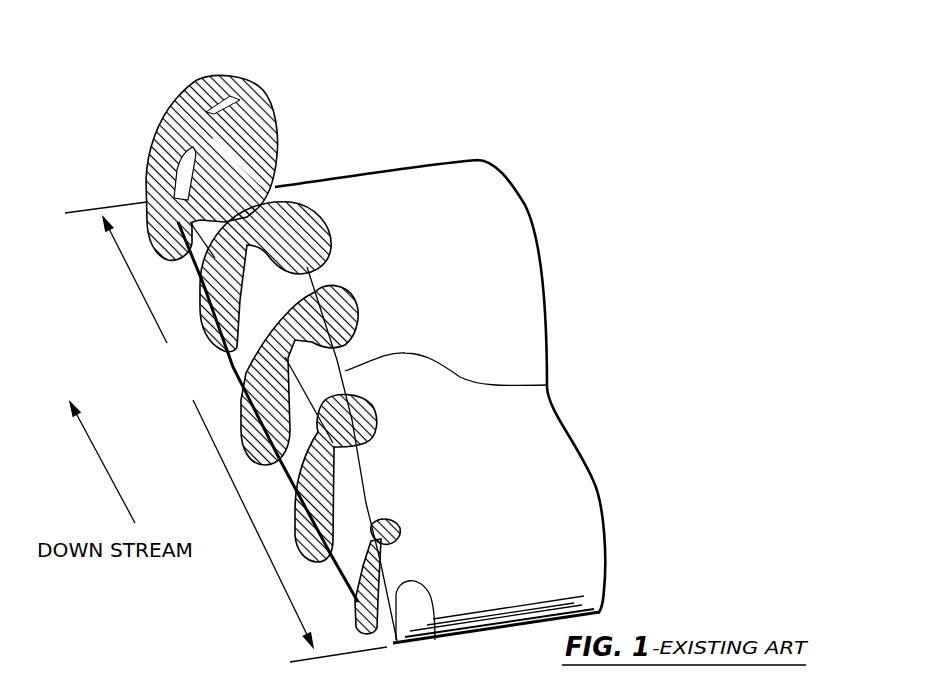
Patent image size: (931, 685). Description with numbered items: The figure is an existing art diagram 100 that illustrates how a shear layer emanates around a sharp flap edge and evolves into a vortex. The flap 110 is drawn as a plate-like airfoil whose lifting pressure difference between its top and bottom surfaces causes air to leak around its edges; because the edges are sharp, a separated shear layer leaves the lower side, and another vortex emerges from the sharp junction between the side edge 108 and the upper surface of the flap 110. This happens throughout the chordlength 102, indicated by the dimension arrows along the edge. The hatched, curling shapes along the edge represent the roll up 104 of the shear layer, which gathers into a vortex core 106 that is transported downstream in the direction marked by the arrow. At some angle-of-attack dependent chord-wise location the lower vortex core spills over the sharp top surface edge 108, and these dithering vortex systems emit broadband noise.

The existing art diagram 100 is at (372, 374).
The chordlength 102 is at (245, 439).
The shear layer roll up 104 is at (227, 100).
The vortex core 106 is at (547, 385).
The side edge 108 is at (434, 613).
The flap 110 is at (512, 247).